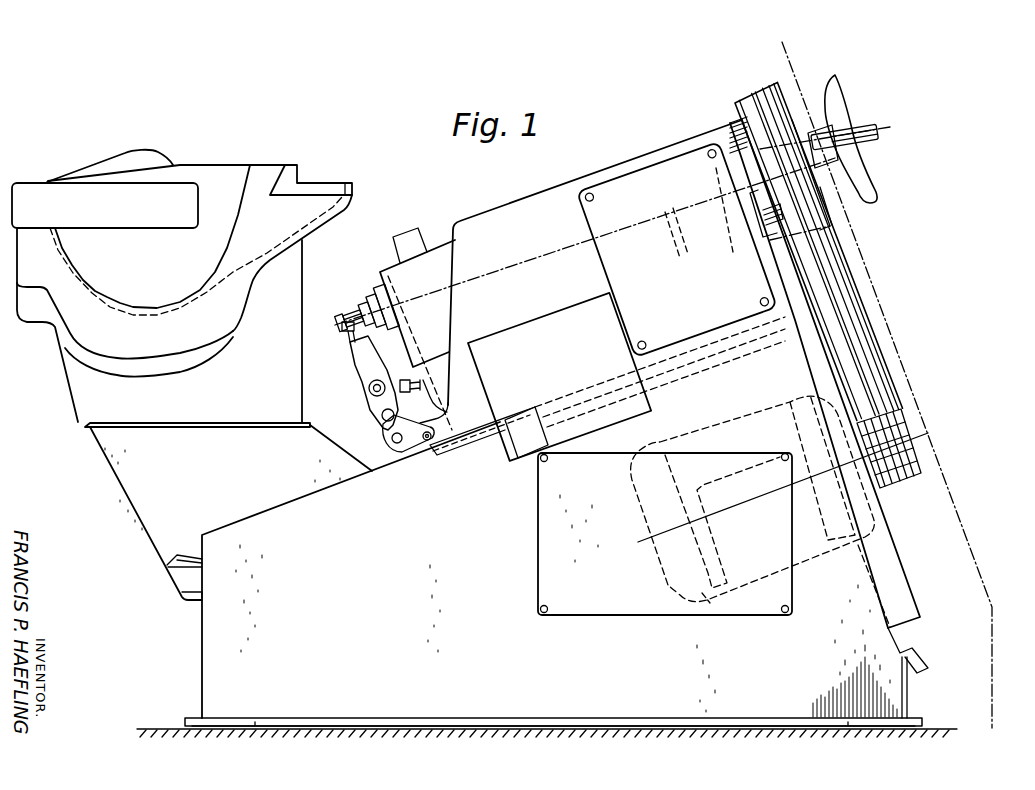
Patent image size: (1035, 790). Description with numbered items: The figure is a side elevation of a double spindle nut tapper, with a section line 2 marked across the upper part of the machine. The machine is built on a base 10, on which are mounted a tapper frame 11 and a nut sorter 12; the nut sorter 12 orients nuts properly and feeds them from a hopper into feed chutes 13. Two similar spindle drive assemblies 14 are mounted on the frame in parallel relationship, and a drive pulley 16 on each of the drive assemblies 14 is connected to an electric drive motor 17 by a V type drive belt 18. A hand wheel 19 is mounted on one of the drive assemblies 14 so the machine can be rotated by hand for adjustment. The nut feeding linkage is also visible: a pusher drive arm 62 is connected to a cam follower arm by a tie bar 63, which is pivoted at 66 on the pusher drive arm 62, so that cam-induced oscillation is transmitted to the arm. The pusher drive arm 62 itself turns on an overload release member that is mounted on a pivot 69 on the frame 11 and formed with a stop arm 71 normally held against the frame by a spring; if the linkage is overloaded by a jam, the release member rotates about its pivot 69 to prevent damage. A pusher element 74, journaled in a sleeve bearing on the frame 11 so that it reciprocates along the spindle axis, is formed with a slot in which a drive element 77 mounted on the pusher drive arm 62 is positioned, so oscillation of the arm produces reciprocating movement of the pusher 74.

The section line 2- 2 is at (787, 50).
The base 10 is at (486, 625).
The tapper frame 11 is at (560, 186).
The nut sorter 12 is at (303, 266).
The feed chutes 13 is at (423, 242).
The spindle drive assemblies 14 is at (862, 123).
The drive pulley 16 is at (733, 102).
The electric drive motor 17 is at (727, 422).
The V type drive belt 18 is at (835, 290).
The hand wheel 19 is at (873, 185).
The pusher drive arm 62 is at (362, 362).
The tie bar 63 is at (415, 372).
The pivot 66 is at (372, 393).
The pivot 69 is at (390, 442).
The stop arm 71 is at (422, 441).
The pusher element 74 is at (350, 322).
The drive element 77 is at (344, 337).